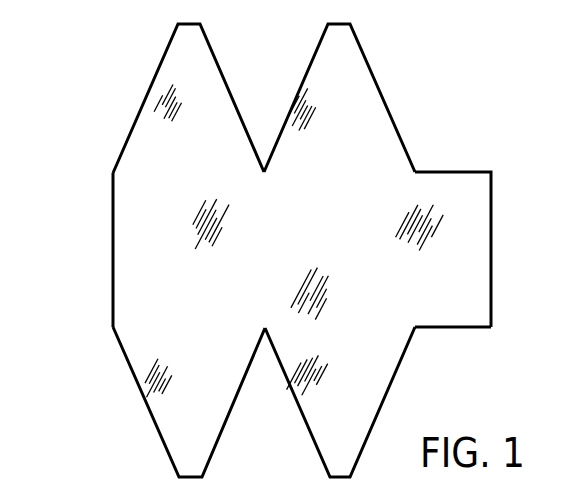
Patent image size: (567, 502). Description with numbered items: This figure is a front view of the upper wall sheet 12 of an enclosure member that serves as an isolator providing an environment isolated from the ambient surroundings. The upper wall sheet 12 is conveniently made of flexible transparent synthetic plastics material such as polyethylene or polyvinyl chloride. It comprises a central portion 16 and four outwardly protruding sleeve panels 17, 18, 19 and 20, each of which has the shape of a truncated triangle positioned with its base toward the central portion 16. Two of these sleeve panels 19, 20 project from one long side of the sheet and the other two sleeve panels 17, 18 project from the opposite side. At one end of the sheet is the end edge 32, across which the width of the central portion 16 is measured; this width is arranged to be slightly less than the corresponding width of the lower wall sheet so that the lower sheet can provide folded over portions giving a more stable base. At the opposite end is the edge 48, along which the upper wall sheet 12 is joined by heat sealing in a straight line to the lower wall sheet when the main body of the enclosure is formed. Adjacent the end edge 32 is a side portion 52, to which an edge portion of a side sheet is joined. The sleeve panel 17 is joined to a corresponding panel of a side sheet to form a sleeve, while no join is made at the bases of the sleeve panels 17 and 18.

The upper wall sheet 12 is at (92, 248).
The central portion 16 is at (261, 259).
The sleeve panel 17 is at (170, 418).
The sleeve panel 18 is at (313, 418).
The sleeve panel 19 is at (163, 80).
The sleeve panel 20 is at (316, 78).
The end edge 32 is at (491, 244).
The edge 48 is at (112, 200).
The side portion 52 is at (473, 327).